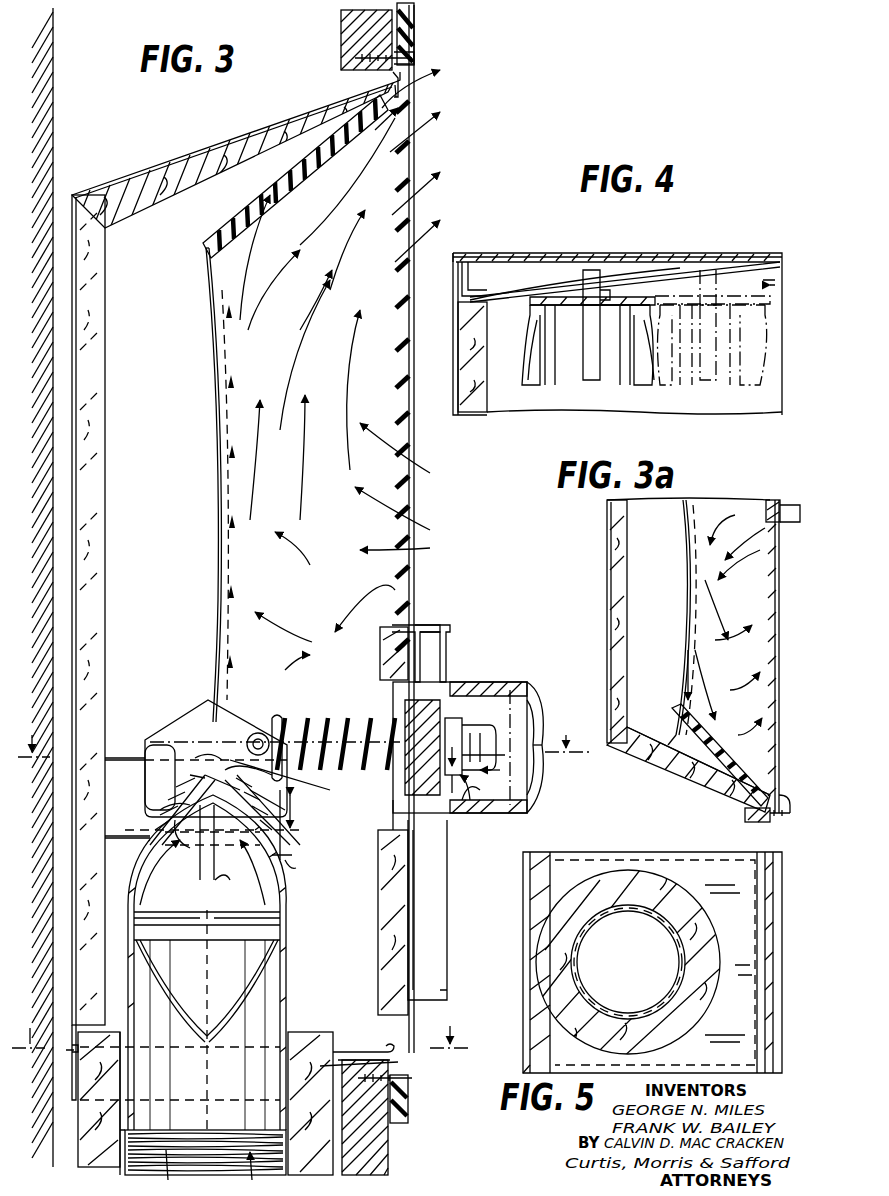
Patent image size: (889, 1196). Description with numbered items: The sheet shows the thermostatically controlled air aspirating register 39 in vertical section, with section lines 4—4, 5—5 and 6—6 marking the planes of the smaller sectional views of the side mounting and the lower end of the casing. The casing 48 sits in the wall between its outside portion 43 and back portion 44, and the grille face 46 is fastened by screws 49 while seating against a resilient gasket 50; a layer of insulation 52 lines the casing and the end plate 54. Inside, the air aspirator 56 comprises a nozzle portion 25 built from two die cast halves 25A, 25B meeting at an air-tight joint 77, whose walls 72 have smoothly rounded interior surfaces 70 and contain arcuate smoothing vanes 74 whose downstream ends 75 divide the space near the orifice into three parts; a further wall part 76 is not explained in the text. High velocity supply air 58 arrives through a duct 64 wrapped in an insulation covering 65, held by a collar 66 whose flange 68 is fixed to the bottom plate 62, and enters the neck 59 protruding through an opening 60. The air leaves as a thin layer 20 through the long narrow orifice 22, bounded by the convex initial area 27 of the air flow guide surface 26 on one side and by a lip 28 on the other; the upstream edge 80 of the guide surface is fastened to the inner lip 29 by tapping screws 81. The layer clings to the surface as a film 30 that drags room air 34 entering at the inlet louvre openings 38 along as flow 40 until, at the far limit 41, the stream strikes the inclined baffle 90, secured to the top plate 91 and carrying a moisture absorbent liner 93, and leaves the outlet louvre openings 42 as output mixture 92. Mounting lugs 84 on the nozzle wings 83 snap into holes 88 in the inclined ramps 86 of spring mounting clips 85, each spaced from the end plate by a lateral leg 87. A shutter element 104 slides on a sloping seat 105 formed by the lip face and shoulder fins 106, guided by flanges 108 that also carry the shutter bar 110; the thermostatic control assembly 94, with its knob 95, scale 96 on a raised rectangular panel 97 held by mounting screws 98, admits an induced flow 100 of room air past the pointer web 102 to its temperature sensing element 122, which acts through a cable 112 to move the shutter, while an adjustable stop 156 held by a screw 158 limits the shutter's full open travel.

In FIG. 3, the section line 4— 4 is at (257, 745).
In FIG. 3, the section line 5— 5 is at (240, 1026).
In FIG. 3, the section line 6- 6 is at (224, 745).
In FIG. 3, the thin layer 20 is at (212, 755).
In FIG. 3, the orifice 22 is at (180, 755).
In FIG. 3, the nozzle portion 25 is at (298, 916).
In FIG. 3, the die cast half 25A is at (132, 900).
In FIG. 3, the die cast half 25B is at (286, 948).
In FIG. 3, the air flow guide surface 26 is at (214, 447).
In FIG. 3A, the air flow guide surface 26 is at (684, 631).
In FIG. 3, the initial area 27 is at (205, 773).
In FIG. 3, the lip 28 is at (212, 842).
In FIG. 3, the lip 29 is at (182, 800).
In FIG. 3, the film of air 30 is at (216, 365).
In FIG. 3A, the film of air 30 is at (688, 596).
In FIG. 3, the room air 34 is at (482, 546).
In FIG. 3, the inlet louvre openings 38 is at (414, 498).
In FIG. 3A, the inlet louvre openings 38 is at (779, 568).
In FIG. 3, the aspirating register 39 is at (497, 586).
In FIG. 3, the flow arrows 40 is at (300, 465).
In FIG. 3, the far limit 41 is at (205, 260).
In FIG. 3, the outlet louvre openings 42 is at (414, 142).
In FIG. 3A, the outlet louvre openings 42 is at (780, 764).
In FIG. 3, the outside portion of room wall 43 is at (340, 42).
In FIG. 3A, the outside portion of room wall 43 is at (745, 815).
In FIG. 3, the back portion of room wall 44 is at (53, 112).
In FIG. 3, the face plate 46 is at (414, 82).
In FIG. 3A, the face plate 46 is at (791, 820).
In FIG. 3, the casing 48 is at (100, 190).
In FIG. 4, the casing 48 is at (747, 250).
In FIG. 3A, the casing 48 is at (622, 765).
In FIG. 5, the casing 48 is at (520, 963).
In FIG. 3, the screws 49 is at (414, 56).
In FIG. 3A, the screws 49 is at (771, 827).
In FIG. 3, the resilient gasket 50 is at (414, 22).
In FIG. 3, the insulation 52 is at (110, 214).
In FIG. 4, the insulation 52 is at (490, 412).
In FIG. 3A, the insulation 52 is at (772, 500).
In FIG. 5, the insulation 52 is at (550, 853).
In FIG. 4, the end plate 54 is at (540, 256).
In FIG. 3, the air aspirator 56 is at (318, 870).
In FIG. 3, the high velocity supply air 58 is at (245, 1180).
In FIG. 3, the neck 59 is at (134, 1087).
In FIG. 5, the neck 59 is at (680, 962).
In FIG. 5, the opening 60 is at (682, 888).
In FIG. 3, the bottom plate 62 is at (70, 1048).
In FIG. 5, the bottom plate 62 is at (686, 862).
In FIG. 3, the duct 64 is at (130, 1170).
In FIG. 5, the duct 64 is at (600, 914).
In FIG. 3, the insulation covering 65 is at (78, 1166).
In FIG. 5, the insulation covering 65 is at (712, 925).
In FIG. 3, the collar 66 is at (66, 1100).
In FIG. 5, the collar 66 is at (602, 868).
In FIG. 3, the flange 68 is at (368, 1054).
In FIG. 5, the flange 68 is at (662, 860).
In FIG. 3, the interior surfaces 70 is at (170, 965).
In FIG. 3, the nozzle walls 72 is at (130, 988).
In FIG. 3, the arcuate smoothing vanes 74 is at (170, 938).
In FIG. 3, the downstream ends 75 is at (232, 870).
In FIG. 3, the chamber wall 76 is at (133, 858).
In FIG. 3, the air-tight joint 77 is at (200, 1082).
In FIG. 4, the air-tight joint 77 is at (634, 401).
In FIG. 3, the upstream edge 80 is at (178, 845).
In FIG. 3, the tapping screws 81 is at (165, 805).
In FIG. 4, the wings 83 is at (530, 370).
In FIG. 4, the mounting lugs 84 is at (588, 268).
In FIG. 3, the spring mounting clips 85 is at (112, 760).
In FIG. 4, the spring mounting clips 85 is at (508, 303).
In FIG. 4, the inclined leg 86 is at (640, 275).
In FIG. 4, the lateral leg 87 is at (460, 286).
In FIG. 4, the hole 88 is at (606, 282).
In FIG. 3, the inclined baffle 90 is at (240, 214).
In FIG. 3A, the inclined baffle 90 is at (694, 732).
In FIG. 3, the top plate 91 is at (222, 140).
In FIG. 3A, the top plate 91 is at (655, 766).
In FIG. 3, the output mixture 92 is at (436, 100).
In FIG. 3, the moisture absorbent liner 93 is at (250, 230).
In FIG. 3A, the moisture absorbent liner 93 is at (742, 748).
In FIG. 3, the thermostatic control assembly 94 is at (540, 688).
In FIG. 3, the adjustable knob 95 is at (495, 684).
In FIG. 3, the room temperature setting scale 96 is at (447, 632).
In FIG. 3A, the room temperature setting scale 96 is at (800, 505).
In FIG. 3, the raised rectangular panel 97 is at (447, 885).
In FIG. 3, the mounting screws 98 is at (417, 831).
In FIG. 3, the induced flow of room air 100 is at (546, 702).
In FIG. 3, the triangular web 102 is at (544, 760).
In FIG. 3, the shutter element 104 is at (280, 776).
In FIG. 3, the sloping seat 105 is at (315, 811).
In FIG. 3, the shoulder fins 106 is at (290, 815).
In FIG. 3, the flanges 108 is at (208, 712).
In FIG. 3, the shutter bar 110 is at (258, 732).
In FIG. 3, the cable 112 is at (284, 726).
In FIG. 3, the temperature sensing element 122 is at (450, 812).
In FIG. 3, the stop 156 is at (290, 850).
In FIG. 3, the screw 158 is at (290, 868).